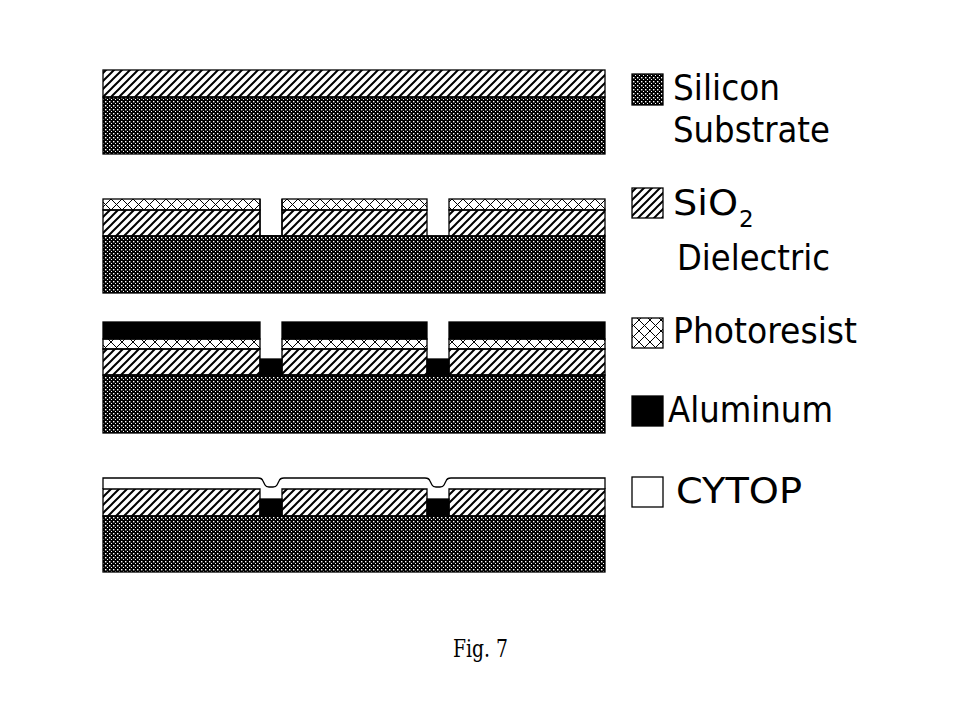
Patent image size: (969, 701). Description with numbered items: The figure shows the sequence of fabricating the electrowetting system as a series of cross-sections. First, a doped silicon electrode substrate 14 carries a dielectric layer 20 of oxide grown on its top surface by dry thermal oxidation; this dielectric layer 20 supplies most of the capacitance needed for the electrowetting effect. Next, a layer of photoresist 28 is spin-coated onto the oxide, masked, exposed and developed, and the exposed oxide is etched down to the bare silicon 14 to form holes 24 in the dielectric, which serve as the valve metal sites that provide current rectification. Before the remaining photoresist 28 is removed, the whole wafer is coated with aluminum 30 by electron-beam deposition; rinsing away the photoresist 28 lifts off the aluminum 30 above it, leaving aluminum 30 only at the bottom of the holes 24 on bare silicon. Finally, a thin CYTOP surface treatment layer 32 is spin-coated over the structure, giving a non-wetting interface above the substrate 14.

The silicon electrode substrate 14 is at (103, 135).
The dielectric layer 20 is at (184, 69).
The holes 24 is at (270, 203).
The photoresist 28 is at (537, 199).
The aluminum layer 30 is at (103, 328).
The surface treatment layer 32 is at (103, 482).